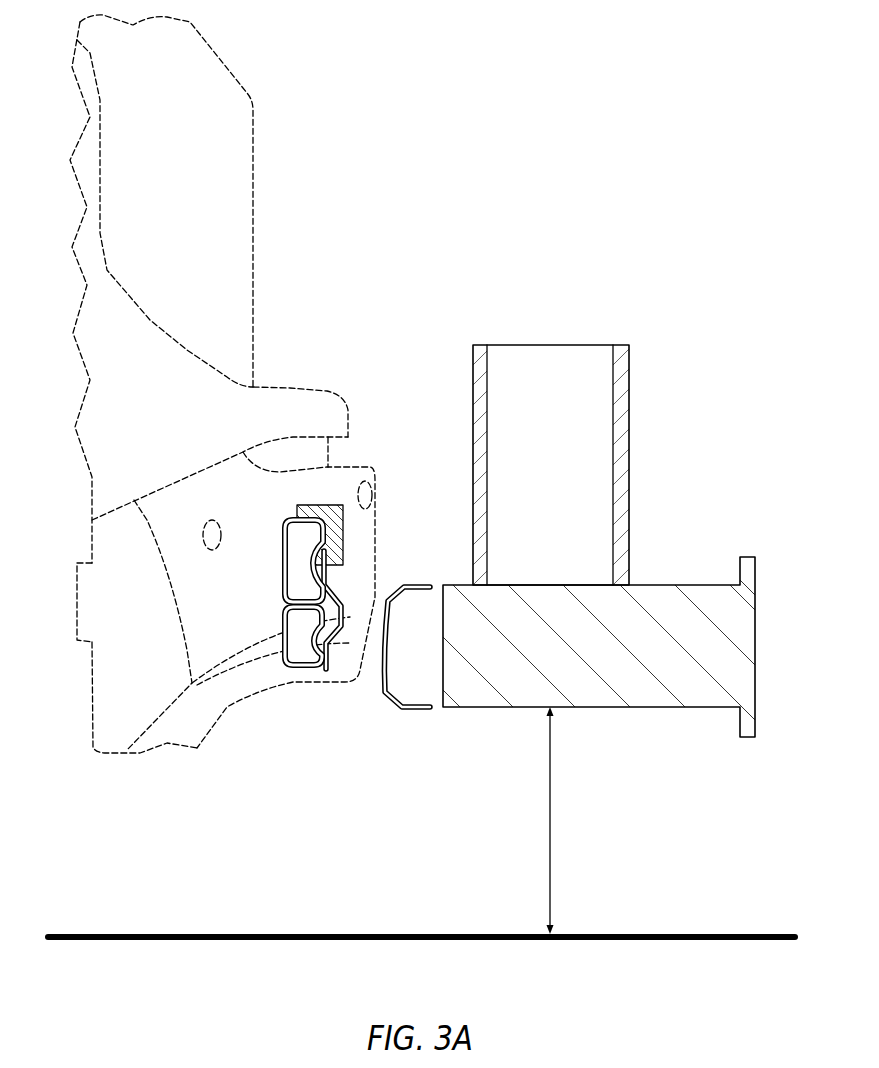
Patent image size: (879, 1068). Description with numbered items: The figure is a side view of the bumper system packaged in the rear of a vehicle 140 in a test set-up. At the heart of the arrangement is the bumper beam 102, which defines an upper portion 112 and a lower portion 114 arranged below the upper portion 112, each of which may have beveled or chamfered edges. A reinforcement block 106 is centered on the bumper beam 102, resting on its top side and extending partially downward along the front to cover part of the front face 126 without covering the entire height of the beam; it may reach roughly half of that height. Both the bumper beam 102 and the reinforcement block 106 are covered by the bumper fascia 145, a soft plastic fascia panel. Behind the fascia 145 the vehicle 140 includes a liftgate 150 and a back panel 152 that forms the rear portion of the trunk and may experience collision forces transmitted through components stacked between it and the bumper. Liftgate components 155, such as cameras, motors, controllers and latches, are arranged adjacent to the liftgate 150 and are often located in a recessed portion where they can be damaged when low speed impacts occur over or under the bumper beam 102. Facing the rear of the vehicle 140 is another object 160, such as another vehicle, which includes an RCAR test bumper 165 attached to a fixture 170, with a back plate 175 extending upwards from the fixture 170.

The bumper beam 102 is at (324, 574).
The reinforcement block 106 is at (330, 510).
The upper portion 112 is at (283, 563).
The lower portion 114 is at (288, 618).
The front face 126 is at (328, 585).
The vehicle 140 is at (360, 148).
The bumper fascia 145 is at (288, 378).
The liftgate 150 is at (257, 288).
The back panel 152 is at (77, 588).
The liftgate components 155 is at (373, 492).
The object 160 is at (661, 547).
The bumper 165 is at (412, 712).
The fixture 170 is at (497, 710).
The back plate 175 is at (573, 365).